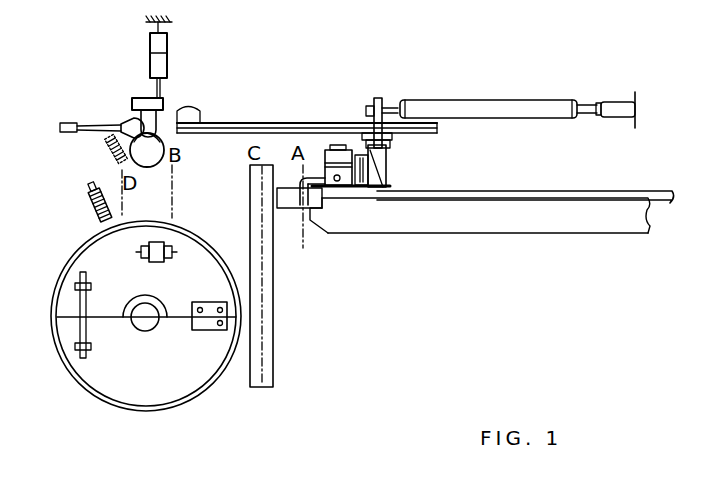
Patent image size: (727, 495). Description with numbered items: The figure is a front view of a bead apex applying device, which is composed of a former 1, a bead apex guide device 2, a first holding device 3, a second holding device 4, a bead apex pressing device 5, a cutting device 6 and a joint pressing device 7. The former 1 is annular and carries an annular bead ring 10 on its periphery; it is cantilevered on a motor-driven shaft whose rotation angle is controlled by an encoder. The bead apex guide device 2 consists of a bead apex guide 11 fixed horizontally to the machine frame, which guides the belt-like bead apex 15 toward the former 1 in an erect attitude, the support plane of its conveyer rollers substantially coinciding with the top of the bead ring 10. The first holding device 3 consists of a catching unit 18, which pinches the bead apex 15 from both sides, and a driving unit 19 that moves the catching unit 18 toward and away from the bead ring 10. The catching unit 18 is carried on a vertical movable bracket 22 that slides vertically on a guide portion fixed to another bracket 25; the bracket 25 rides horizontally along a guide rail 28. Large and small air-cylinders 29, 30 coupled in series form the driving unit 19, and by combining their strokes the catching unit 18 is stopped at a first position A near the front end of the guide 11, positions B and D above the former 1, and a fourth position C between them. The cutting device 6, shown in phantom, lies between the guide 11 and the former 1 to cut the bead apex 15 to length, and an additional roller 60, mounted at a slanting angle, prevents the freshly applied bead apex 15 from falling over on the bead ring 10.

The former 1 is at (117, 380).
The bead apex guide device 2 is at (586, 242).
The first holding device 3 is at (296, 204).
The second holding device 4 is at (138, 240).
The bead apex pressing device 5 is at (148, 172).
The cutting device 6 is at (278, 380).
The joint pressing device 7 is at (68, 112).
The bead ring 10 is at (188, 408).
The bead apex guide 11 is at (434, 226).
The bead apex 15 is at (658, 198).
The catching unit 18 is at (320, 224).
The driving unit 19 is at (575, 31).
The vertical movable bracket 22 is at (384, 168).
The bracket 25 is at (356, 186).
The guide rail 28 is at (262, 122).
The large air-cylinder 29 is at (506, 104).
The small air-cylinder 30 is at (608, 105).
The additional roller 60 is at (92, 218).